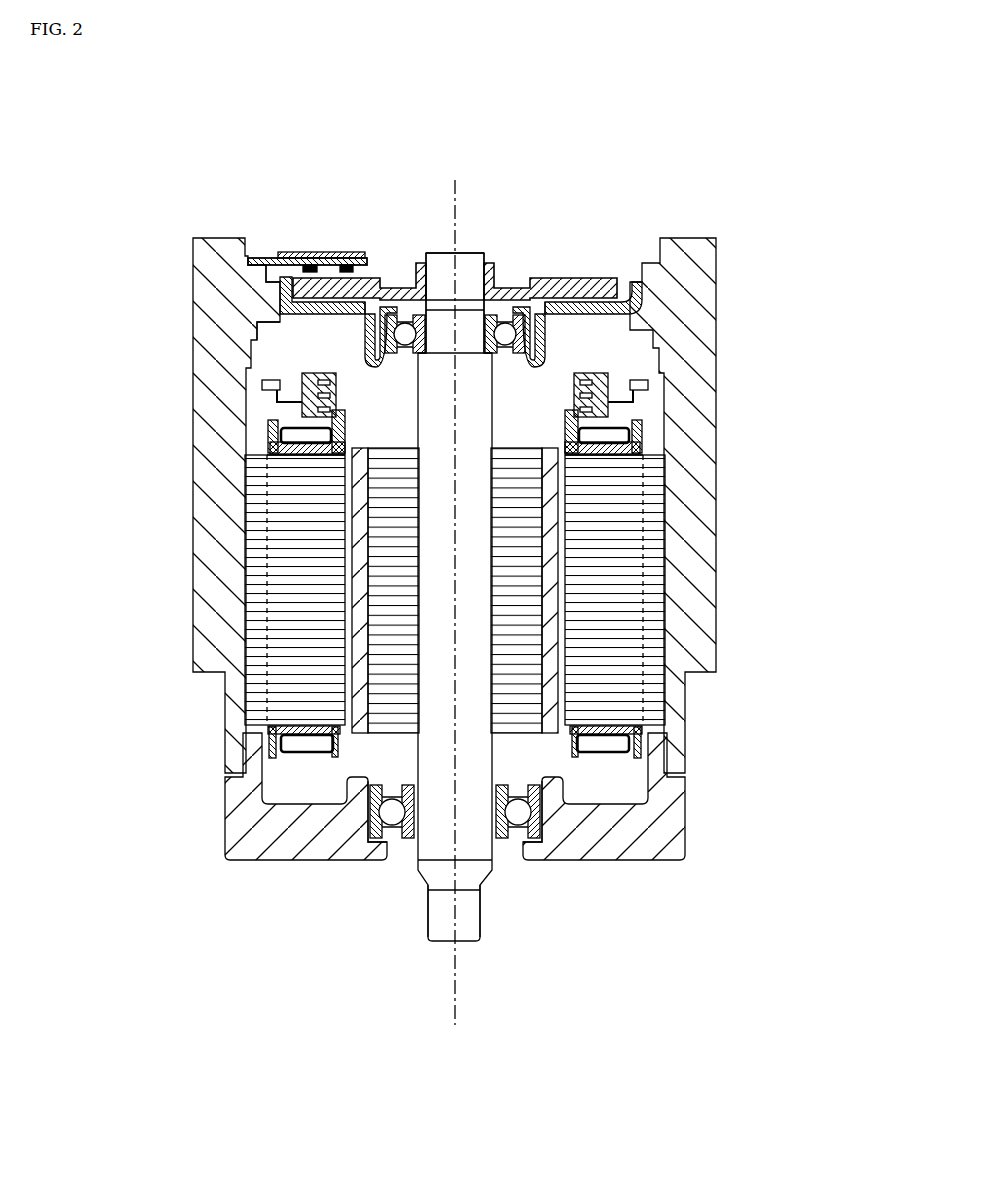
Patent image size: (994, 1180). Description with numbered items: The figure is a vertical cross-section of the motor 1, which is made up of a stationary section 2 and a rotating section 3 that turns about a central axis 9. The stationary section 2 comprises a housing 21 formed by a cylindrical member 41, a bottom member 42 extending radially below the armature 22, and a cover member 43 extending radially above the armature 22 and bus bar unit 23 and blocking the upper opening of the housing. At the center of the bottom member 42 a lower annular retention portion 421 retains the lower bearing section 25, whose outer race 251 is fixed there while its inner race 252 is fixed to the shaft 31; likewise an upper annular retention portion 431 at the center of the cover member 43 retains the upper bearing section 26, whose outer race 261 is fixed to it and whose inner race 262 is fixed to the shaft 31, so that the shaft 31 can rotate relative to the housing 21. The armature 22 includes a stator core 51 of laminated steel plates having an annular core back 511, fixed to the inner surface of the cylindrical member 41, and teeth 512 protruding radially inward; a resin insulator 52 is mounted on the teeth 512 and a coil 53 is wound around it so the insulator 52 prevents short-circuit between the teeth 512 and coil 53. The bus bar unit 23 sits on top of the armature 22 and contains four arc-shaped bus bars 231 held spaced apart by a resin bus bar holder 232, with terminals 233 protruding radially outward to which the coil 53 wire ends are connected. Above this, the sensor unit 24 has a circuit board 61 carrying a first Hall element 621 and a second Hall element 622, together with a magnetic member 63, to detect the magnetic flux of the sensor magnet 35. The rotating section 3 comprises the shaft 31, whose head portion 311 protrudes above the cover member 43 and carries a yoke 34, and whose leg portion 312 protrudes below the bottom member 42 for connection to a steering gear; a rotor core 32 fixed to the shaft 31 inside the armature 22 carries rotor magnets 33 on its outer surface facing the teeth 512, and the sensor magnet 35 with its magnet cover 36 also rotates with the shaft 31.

The motor 1 is at (656, 193).
The stationary section 2 is at (618, 878).
The rotating section 3 is at (552, 748).
The central axis 9 is at (456, 212).
The housing 21 is at (783, 395).
The armature 22 is at (97, 607).
The bus bar unit 23 is at (132, 343).
The sensor unit 24 is at (388, 168).
The lower bearing section 25 is at (573, 930).
The upper bearing section 26 is at (490, 210).
The shaft 31 is at (432, 481).
The rotor core 32 is at (390, 518).
The rotor magnets 33 is at (360, 541).
The yoke 34 is at (258, 324).
The sensor magnet 35 is at (266, 284).
The magnet cover 36 is at (382, 266).
The cylindrical member 41 is at (683, 502).
The bottom member 42 is at (675, 787).
The cover member 43 is at (677, 314).
The stator core 51 is at (138, 586).
The insulator 52 is at (270, 733).
The coil 53 is at (268, 762).
The circuit board 61 is at (258, 256).
The magnetic member 63 is at (339, 256).
The bus bars 231 is at (303, 417).
The bus bar holder 232 is at (300, 372).
The terminals 233 is at (262, 386).
The outer race 251 is at (534, 838).
The inner race 252 is at (500, 838).
The outer race 261 is at (519, 318).
The inner race 262 is at (492, 318).
The head portion 311 is at (443, 266).
The leg portion 312 is at (445, 926).
The lower annular retention portion 421 is at (360, 821).
The upper annular retention portion 431 is at (536, 346).
The core back 511 is at (257, 581).
The teeth 512 is at (308, 621).
The first Hall element 621 is at (350, 255).
The second Hall element 622 is at (302, 256).